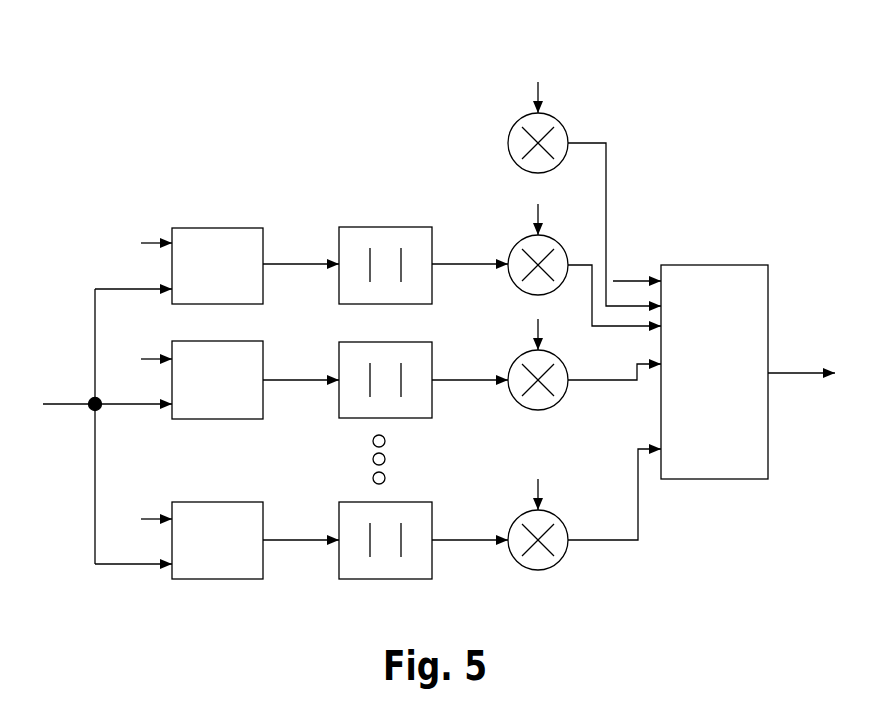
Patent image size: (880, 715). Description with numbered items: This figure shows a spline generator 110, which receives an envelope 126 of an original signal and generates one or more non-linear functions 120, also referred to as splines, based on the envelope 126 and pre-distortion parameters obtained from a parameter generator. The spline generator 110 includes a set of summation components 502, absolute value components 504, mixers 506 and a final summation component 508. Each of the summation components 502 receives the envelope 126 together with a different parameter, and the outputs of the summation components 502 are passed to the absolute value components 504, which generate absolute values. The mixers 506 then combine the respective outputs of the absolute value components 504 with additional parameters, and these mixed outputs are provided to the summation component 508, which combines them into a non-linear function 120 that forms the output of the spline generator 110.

The spline generator 110 is at (167, 626).
The non-linear function 120 is at (777, 377).
The envelope 126 is at (82, 402).
The summation component 502 is at (185, 190).
The absolute value component 504 is at (357, 190).
The mixer 506 is at (490, 108).
The summation component 508 is at (698, 265).